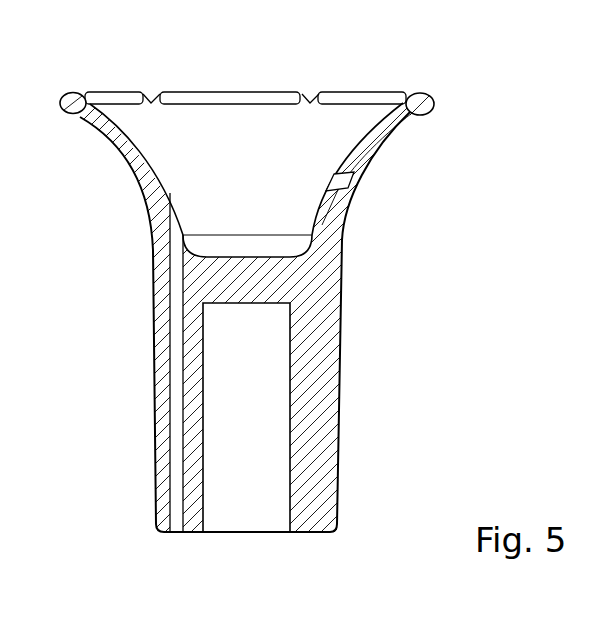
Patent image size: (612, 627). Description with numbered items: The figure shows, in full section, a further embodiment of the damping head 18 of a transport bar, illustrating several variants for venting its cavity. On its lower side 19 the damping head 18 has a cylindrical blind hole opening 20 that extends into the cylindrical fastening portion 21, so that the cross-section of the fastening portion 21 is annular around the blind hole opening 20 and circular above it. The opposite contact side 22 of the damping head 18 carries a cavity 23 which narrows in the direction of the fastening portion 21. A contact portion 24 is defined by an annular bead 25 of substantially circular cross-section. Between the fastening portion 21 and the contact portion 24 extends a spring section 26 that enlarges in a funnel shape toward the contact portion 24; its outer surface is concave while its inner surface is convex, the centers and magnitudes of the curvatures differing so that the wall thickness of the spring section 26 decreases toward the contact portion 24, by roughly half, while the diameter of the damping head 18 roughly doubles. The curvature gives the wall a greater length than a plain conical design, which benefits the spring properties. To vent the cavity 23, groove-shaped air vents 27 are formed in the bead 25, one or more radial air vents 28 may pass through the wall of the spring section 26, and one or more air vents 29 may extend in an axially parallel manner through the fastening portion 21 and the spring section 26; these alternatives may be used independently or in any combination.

The damping head 18 is at (306, 315).
The lower side 19 is at (308, 537).
The blind hole opening 20 is at (243, 515).
The fastening portion 21 is at (341, 377).
The contact side 22 is at (390, 92).
The cavity 23 is at (235, 150).
The contact portion 24 is at (437, 98).
The annular bead 25 is at (63, 92).
The spring section 26 is at (107, 128).
The air vents 27 is at (147, 92).
The radial air vents 28 is at (346, 178).
The air vents 29 is at (176, 515).